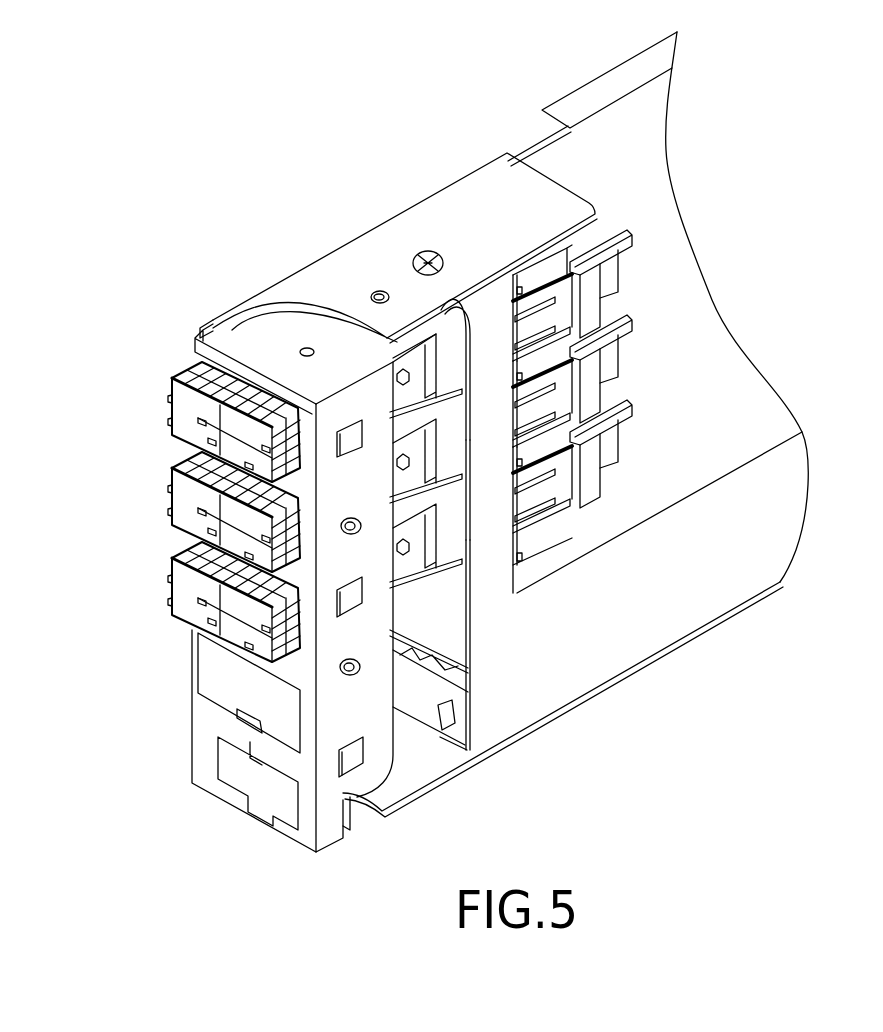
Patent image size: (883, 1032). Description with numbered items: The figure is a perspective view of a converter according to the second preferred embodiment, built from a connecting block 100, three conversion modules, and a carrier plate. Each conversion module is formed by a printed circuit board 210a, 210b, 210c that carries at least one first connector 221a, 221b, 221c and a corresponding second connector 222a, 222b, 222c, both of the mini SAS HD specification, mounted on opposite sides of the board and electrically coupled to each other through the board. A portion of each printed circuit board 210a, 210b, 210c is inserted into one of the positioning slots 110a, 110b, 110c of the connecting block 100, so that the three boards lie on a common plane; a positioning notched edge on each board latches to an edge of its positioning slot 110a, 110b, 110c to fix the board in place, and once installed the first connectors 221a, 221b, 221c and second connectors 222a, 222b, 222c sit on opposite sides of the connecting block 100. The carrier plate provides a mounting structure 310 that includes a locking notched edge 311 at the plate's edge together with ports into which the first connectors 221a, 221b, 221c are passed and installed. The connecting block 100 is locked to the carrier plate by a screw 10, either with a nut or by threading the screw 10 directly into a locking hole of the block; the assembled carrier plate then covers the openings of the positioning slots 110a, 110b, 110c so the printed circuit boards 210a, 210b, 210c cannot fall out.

The screw 10 is at (427, 256).
The connecting block 100 is at (520, 693).
The positioning slot 110a is at (466, 393).
The positioning slot 110b is at (466, 487).
The positioning slot 110c is at (466, 585).
The printed circuit board 210a is at (540, 367).
The printed circuit board 210b is at (540, 452).
The printed circuit board 210c is at (545, 535).
The first connector 221a is at (397, 342).
The first connector 221b is at (185, 507).
The first connector 221c is at (185, 597).
The second connector 222a is at (608, 235).
The second connector 222b is at (610, 320).
The second connector 222c is at (612, 410).
The mounting structure 310 is at (250, 827).
The locking notched edge 311 is at (357, 800).